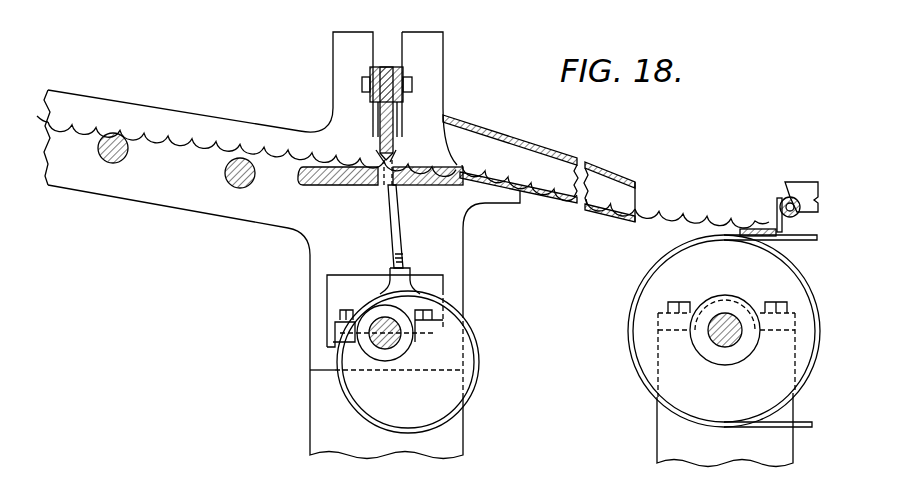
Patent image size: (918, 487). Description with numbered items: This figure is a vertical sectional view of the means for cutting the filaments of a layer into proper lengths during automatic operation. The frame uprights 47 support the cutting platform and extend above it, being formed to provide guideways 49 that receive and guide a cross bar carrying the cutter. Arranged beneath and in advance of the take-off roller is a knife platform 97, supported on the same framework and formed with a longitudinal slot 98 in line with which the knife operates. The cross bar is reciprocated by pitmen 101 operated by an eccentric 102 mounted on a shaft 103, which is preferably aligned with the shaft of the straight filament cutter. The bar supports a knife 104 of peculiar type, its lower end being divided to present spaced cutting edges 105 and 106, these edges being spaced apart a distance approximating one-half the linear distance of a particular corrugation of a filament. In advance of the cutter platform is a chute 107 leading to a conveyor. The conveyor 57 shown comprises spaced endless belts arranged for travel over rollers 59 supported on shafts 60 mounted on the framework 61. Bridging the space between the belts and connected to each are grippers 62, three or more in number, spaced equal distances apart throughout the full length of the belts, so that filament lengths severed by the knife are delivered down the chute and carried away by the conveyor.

The frame uprights 47 is at (415, 330).
The guideways 49 is at (400, 53).
The conveyor 57 is at (770, 331).
The rollers 59 is at (638, 333).
The shafts 60 is at (720, 344).
The framework 61 is at (662, 425).
The grippers 62 is at (776, 213).
The knife platform 97 is at (315, 187).
The longitudinal slot 98 is at (383, 186).
The pitmen 101 is at (402, 236).
The eccentric 102 is at (468, 363).
The shaft 103 is at (392, 343).
The knife 104 is at (390, 110).
The cutting edge 105 is at (380, 155).
The cutting edge 106 is at (397, 157).
The chute 107 is at (557, 158).